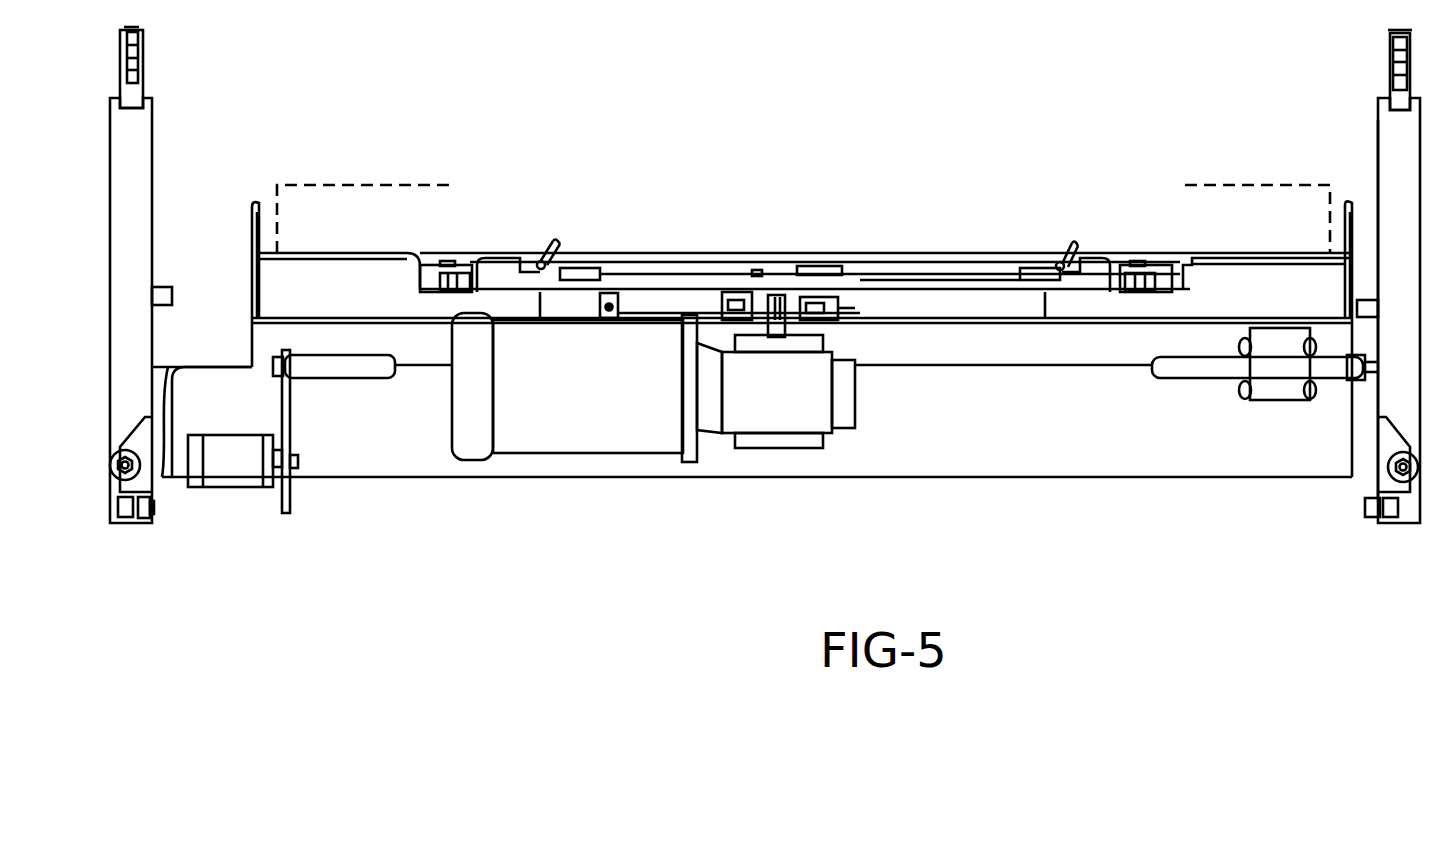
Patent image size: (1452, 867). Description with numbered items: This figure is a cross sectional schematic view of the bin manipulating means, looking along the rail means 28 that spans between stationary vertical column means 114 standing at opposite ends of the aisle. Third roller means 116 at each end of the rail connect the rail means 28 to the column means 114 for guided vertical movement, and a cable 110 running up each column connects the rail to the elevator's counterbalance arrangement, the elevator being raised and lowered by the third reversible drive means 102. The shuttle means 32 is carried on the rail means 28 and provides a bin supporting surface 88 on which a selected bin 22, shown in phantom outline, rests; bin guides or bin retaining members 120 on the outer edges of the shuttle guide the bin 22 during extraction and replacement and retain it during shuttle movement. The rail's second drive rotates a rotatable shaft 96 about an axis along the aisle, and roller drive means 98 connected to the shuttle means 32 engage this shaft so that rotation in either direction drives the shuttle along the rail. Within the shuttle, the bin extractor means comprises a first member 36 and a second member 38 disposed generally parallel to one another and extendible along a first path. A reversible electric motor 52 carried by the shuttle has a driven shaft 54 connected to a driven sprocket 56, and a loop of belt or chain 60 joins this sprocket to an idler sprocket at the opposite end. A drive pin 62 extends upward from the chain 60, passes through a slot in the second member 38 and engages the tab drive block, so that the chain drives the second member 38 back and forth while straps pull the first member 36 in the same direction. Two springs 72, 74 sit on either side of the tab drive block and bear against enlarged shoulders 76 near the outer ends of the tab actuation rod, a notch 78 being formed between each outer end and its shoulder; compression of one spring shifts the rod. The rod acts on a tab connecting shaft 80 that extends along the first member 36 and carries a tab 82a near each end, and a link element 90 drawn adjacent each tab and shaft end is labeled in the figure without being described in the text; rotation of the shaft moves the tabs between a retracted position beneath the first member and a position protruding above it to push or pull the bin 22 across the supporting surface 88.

The bin 22 is at (388, 183).
The rail means 28 is at (1020, 523).
The shuttle means 32 is at (322, 275).
The first member 36 is at (772, 255).
The second member 38 is at (443, 297).
The reversible electric motor 52 is at (594, 436).
The driven shaft 54 is at (775, 328).
The driven sprocket 56 is at (692, 330).
The belt or chain 60 is at (720, 255).
The drive pin 62 is at (815, 255).
The spring 72 is at (920, 255).
The spring 74 is at (702, 255).
The enlarged shoulder 76 is at (620, 255).
The notch 78 is at (541, 298).
The tab connecting shaft 80 is at (538, 258).
The tab 82a is at (545, 250).
The bin supporting surface 88 is at (297, 252).
The link 90 is at (566, 255).
The rotatable shaft 96 is at (1168, 378).
The roller drive means 98 is at (1245, 398).
The third reversible drive means 102 is at (1226, 386).
The cable 110 is at (150, 62).
The stationary vertical column means 114 is at (1385, 113).
The third roller means 116 is at (112, 475).
The bin guides or bin retaining members 120 is at (252, 207).